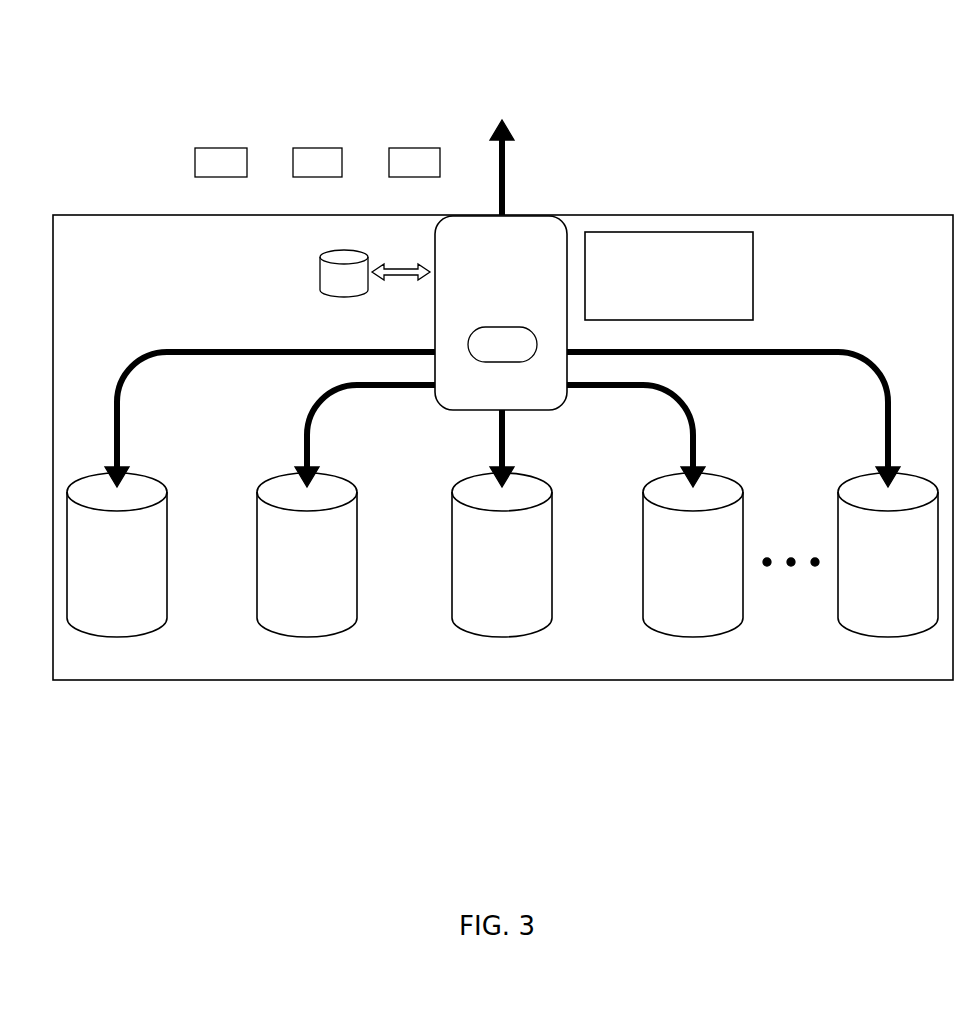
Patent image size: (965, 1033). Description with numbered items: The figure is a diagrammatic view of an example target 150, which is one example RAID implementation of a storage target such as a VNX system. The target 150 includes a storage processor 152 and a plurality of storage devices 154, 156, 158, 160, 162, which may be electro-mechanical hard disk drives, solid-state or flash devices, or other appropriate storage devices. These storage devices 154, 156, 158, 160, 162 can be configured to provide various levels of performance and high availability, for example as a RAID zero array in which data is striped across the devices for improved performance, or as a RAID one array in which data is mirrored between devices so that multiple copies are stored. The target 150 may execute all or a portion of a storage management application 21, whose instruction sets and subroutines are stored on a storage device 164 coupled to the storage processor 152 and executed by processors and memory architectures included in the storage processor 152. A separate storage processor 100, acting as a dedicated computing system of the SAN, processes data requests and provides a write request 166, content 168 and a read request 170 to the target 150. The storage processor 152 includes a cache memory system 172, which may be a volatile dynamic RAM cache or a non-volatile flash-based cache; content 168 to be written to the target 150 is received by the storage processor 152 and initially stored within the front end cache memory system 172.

The target 150 is at (503, 447).
The storage processor 152 is at (501, 313).
The cache memory system 172 is at (502, 344).
The storage device 164 is at (344, 273).
The storage management application 21 is at (753, 288).
The storage processor 100 is at (502, 125).
The write request 166 is at (195, 168).
The content 168 is at (293, 168).
The read request 170 is at (389, 168).
The storage device 154 is at (251, 494).
The storage device 156 is at (346, 511).
The storage device 158 is at (502, 523).
The storage device 160 is at (655, 511).
The storage device 162 is at (752, 494).